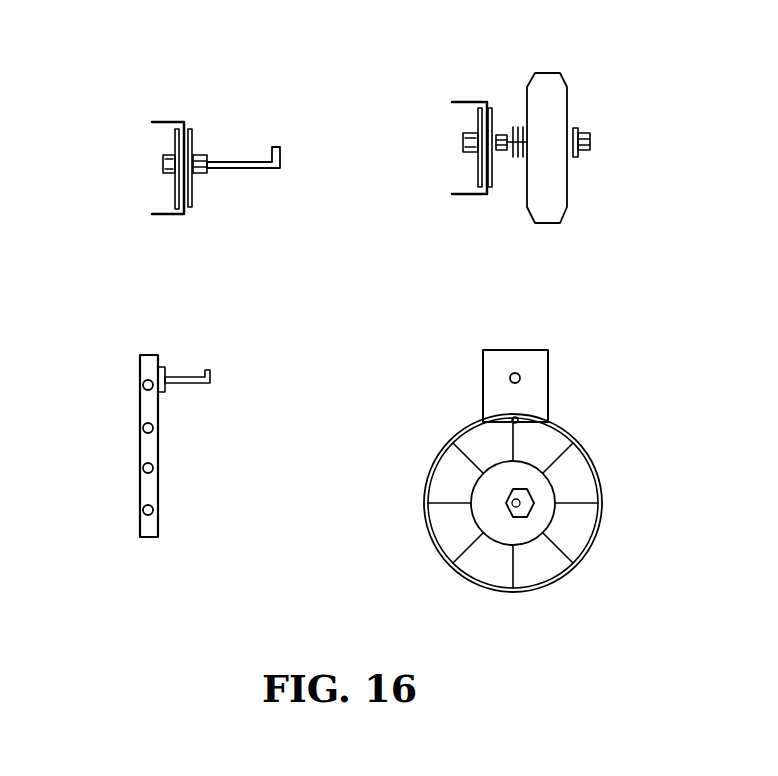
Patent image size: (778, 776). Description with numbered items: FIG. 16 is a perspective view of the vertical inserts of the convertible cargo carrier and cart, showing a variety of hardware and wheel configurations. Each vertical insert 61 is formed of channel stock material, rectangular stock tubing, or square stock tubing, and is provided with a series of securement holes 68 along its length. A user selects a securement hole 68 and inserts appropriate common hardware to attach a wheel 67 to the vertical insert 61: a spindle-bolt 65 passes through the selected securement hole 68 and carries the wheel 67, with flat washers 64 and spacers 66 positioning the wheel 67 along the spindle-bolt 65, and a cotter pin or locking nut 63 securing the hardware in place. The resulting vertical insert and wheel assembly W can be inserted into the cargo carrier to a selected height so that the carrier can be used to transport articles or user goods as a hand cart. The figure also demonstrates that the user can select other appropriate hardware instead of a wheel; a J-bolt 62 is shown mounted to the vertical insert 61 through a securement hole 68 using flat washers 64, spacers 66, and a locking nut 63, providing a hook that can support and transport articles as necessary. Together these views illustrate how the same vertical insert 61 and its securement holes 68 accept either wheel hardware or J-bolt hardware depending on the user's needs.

The vertical insert 61 is at (166, 121).
The J-bolt 62 is at (278, 149).
The cotter pin or locking nut 63 is at (205, 155).
The flat washer 64 is at (172, 188).
The spindle-bolt 65 is at (464, 144).
The spacer 66 is at (515, 157).
The wheel 67 is at (542, 93).
The securement hole 68 is at (155, 468).
The wheel assembly W is at (549, 226).